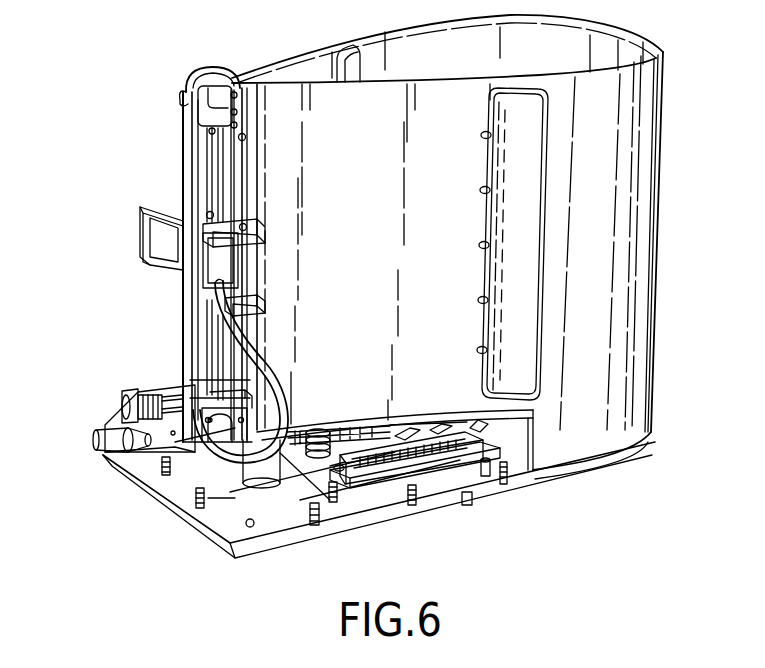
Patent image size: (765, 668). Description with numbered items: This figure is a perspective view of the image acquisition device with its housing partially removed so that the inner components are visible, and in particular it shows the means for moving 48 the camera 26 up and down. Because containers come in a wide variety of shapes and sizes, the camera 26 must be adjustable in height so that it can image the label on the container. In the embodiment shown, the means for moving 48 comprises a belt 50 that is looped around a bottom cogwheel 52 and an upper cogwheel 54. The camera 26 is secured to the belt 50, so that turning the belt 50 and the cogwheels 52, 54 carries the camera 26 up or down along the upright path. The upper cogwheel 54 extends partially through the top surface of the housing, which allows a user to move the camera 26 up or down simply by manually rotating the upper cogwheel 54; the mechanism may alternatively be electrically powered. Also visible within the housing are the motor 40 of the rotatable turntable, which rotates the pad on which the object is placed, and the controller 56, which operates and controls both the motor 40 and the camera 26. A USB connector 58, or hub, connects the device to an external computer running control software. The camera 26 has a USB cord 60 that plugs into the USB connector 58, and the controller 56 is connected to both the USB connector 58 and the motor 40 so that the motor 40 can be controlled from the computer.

The means for moving the camera up and down 48 is at (108, 138).
The motor 40 is at (508, 418).
The belt 50 is at (190, 160).
The upper cogwheel 54 is at (212, 80).
The camera 26 is at (215, 258).
The bottom cogwheel 52 is at (207, 392).
The USB connector 58 is at (167, 447).
The USB cord 60 is at (230, 458).
The controller 56 is at (368, 478).